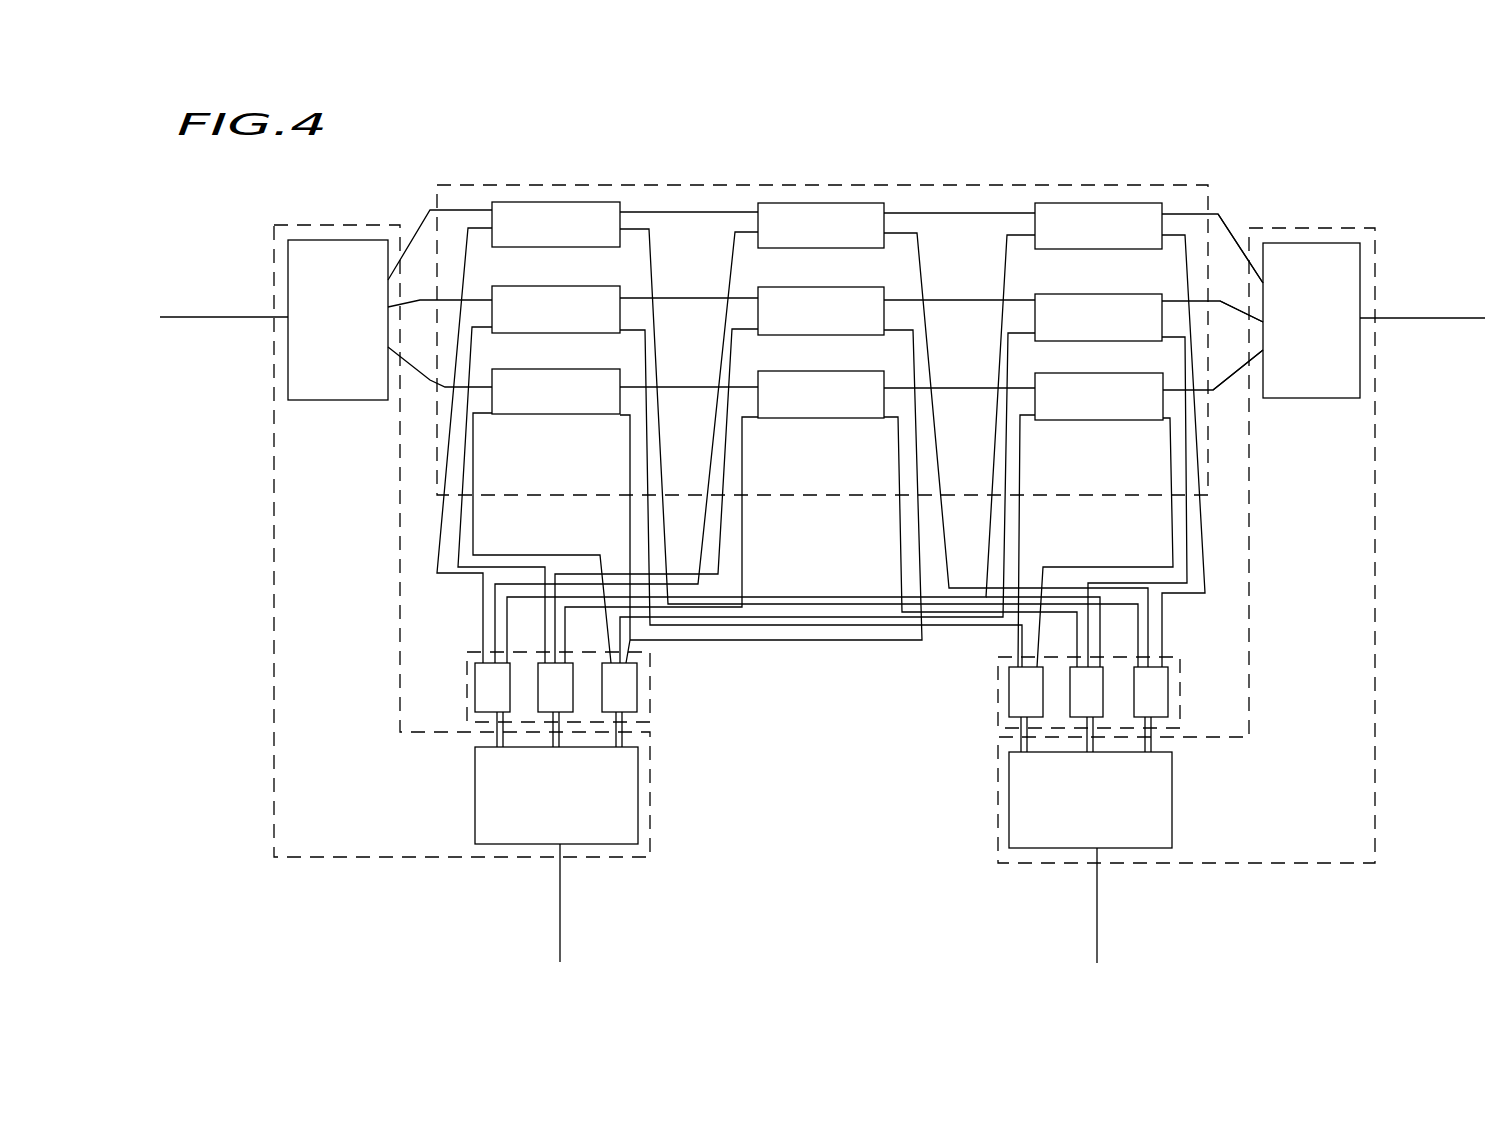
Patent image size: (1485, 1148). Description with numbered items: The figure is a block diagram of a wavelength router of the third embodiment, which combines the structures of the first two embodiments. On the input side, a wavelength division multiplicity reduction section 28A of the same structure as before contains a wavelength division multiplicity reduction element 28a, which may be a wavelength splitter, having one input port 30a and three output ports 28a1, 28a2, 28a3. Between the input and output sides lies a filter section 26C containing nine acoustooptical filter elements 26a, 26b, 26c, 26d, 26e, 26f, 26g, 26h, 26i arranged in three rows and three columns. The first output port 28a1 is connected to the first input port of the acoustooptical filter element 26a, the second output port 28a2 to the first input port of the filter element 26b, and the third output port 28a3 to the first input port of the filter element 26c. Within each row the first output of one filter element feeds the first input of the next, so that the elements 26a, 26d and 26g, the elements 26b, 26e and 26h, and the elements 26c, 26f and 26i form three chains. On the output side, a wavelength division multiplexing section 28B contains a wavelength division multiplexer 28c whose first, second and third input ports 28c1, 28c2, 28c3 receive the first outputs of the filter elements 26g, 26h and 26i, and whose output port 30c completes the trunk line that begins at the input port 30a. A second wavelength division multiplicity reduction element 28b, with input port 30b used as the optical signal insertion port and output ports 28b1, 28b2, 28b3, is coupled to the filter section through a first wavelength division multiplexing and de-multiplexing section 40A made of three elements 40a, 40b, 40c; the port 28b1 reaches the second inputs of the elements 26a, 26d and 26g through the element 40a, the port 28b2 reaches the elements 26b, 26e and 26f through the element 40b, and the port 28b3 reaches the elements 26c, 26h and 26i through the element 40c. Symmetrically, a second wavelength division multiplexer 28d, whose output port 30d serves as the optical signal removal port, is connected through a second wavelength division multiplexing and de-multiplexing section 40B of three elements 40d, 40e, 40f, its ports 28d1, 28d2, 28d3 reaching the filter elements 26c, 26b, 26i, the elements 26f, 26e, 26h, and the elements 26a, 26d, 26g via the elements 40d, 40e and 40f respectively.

The filter section 26C is at (965, 185).
The acoustooptical filter element 26a is at (555, 202).
The acoustooptical filter element 26b is at (528, 286).
The acoustooptical filter element 26c is at (553, 414).
The acoustooptical filter element 26d is at (821, 203).
The acoustooptical filter element 26e is at (793, 287).
The acoustooptical filter element 26f is at (826, 418).
The acoustooptical filter element 26g is at (1098, 203).
The acoustooptical filter element 26h is at (1070, 294).
The acoustooptical filter element 26i is at (1095, 420).
The wavelength division multiplicity reduction section 28A is at (350, 858).
The wavelength division multiplexing section 28B is at (1297, 865).
The wavelength division multiplicity reduction element 28a is at (317, 400).
The first output port 28a1 is at (420, 227).
The second output port 28a2 is at (421, 299).
The third output port 28a3 is at (422, 372).
The wavelength division multiplicity reduction element 28b is at (497, 844).
The first output port 28b1 is at (490, 728).
The second output port 28b2 is at (622, 722).
The third output port 28b3 is at (620, 730).
The wavelength division multiplexer 28c is at (1312, 398).
The first input port 28c1 is at (1228, 227).
The second input port 28c2 is at (1220, 307).
The third input port 28c3 is at (1228, 377).
The wavelength division multiplexer 28d is at (1035, 848).
The first output port 28d1 is at (1010, 742).
The second output port 28d2 is at (1093, 725).
The third output port 28d3 is at (1150, 743).
The input port 30a is at (203, 317).
The input port 30b is at (560, 915).
The output port 30c is at (1430, 320).
The output port 30d is at (1097, 920).
The first wavelength division multiplexing and de-multiplexing section 40A is at (467, 660).
The second wavelength division multiplexing and de-multiplexing section 40B is at (1245, 637).
The wavelength division multiplexing and de-multiplexing element 40a is at (475, 673).
The wavelength division multiplexing and de-multiplexing element 40b is at (538, 690).
The wavelength division multiplexing and de-multiplexing element 40c is at (640, 673).
The wavelength division multiplexing and de-multiplexing element 40d is at (1009, 683).
The wavelength division multiplexing and de-multiplexing element 40e is at (1070, 703).
The wavelength division multiplexing and de-multiplexing element 40f is at (1168, 677).